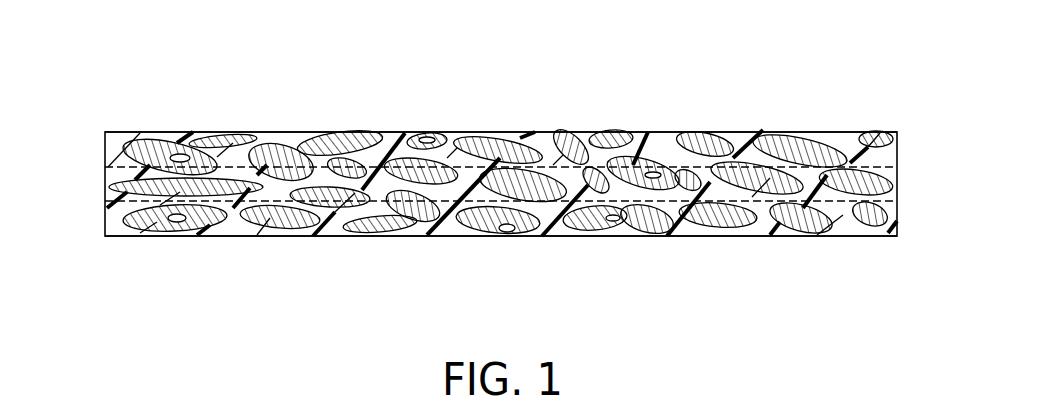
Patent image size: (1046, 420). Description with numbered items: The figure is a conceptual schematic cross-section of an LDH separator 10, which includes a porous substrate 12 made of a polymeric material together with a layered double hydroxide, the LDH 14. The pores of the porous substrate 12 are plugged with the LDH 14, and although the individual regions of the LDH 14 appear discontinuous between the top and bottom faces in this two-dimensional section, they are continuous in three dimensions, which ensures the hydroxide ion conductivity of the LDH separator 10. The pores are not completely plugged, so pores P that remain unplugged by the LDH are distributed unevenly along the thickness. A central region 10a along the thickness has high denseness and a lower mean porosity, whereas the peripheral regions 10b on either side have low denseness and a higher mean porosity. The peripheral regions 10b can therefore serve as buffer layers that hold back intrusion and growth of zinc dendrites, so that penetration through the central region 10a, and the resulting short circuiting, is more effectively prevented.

The LDH separator 10 is at (838, 54).
The central region 10a is at (103, 168).
The peripheral regions 10b is at (103, 133).
The porous substrate 12 is at (868, 158).
The LDH 14 is at (886, 180).
The pores P is at (622, 229).